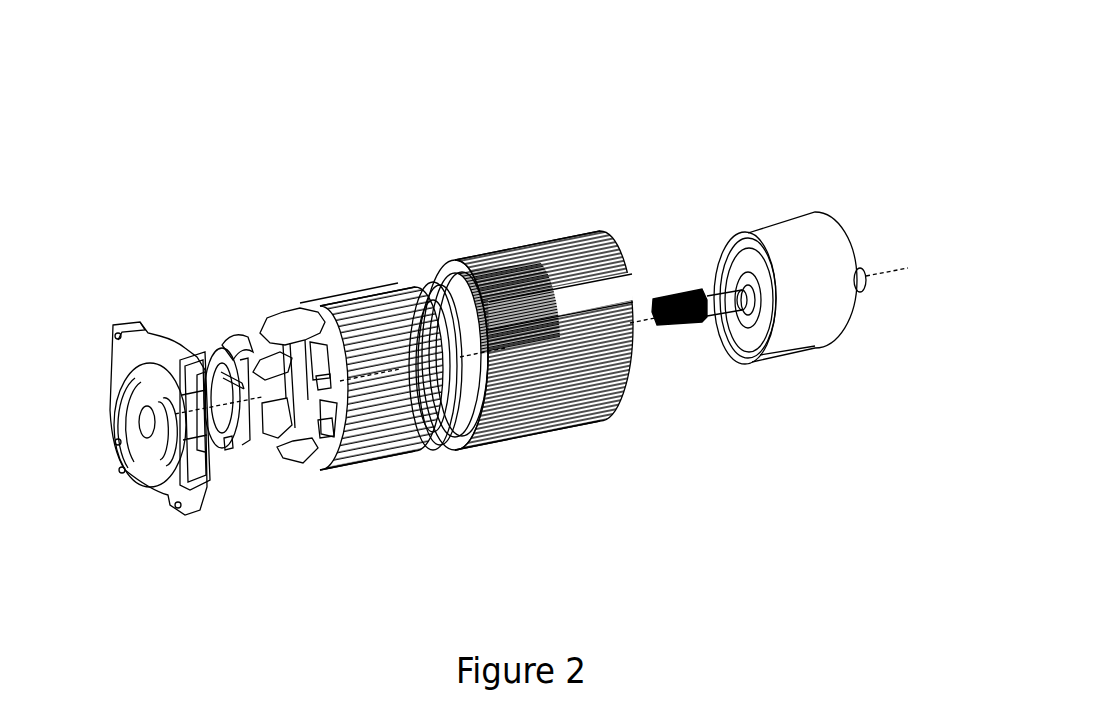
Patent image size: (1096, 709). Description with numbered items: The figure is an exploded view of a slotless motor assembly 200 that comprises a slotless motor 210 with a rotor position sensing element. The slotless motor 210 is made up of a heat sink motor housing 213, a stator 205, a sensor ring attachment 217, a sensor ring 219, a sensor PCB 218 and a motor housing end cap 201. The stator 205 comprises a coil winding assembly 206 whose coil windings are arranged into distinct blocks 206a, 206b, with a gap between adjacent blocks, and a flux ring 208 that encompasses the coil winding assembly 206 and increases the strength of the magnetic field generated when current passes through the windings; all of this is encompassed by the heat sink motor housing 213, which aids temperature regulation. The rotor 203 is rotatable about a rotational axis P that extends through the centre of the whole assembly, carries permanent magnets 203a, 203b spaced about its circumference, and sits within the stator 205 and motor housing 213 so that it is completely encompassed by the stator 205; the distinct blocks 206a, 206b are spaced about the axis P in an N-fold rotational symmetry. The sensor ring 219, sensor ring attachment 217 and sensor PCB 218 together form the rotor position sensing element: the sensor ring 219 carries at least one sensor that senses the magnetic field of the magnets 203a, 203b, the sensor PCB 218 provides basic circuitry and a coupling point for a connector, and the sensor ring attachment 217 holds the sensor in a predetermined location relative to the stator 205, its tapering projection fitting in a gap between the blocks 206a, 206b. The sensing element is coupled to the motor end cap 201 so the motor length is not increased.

The slotless motor assembly 200 is at (834, 142).
The motor housing end cap 201 is at (120, 426).
The rotor 203 is at (801, 267).
The permanent magnet 203a is at (720, 245).
The permanent magnet 203b is at (728, 232).
The stator 205 is at (405, 392).
The coil winding assembly 206 is at (337, 399).
The distinct block 206a is at (330, 427).
The distinct block 206b is at (323, 383).
The flux ring 208 is at (365, 282).
The slotless motor 210 is at (352, 145).
The heat sink motor housing 213 is at (495, 247).
The sensor ring attachment 217 is at (200, 345).
The sensor PCB 218 is at (245, 343).
The sensor ring 219 is at (228, 443).
The rotational axis P is at (551, 326).